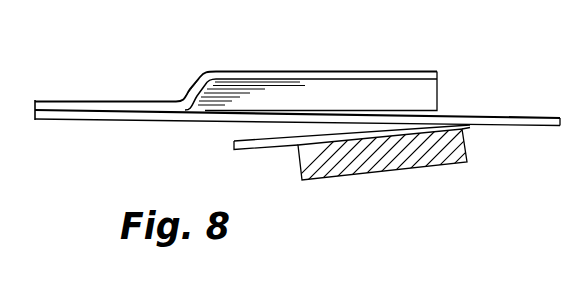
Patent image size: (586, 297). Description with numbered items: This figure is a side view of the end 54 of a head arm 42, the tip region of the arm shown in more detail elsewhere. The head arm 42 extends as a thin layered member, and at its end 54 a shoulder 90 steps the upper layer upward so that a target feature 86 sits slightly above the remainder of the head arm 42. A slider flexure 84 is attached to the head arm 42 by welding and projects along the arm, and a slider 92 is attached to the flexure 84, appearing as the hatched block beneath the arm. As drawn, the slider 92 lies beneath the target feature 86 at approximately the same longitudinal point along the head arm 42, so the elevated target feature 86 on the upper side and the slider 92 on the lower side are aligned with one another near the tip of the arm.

The head arm 42 is at (47, 100).
The end of head arm 54 is at (232, 68).
The shoulder 90 is at (196, 70).
The target feature 86 is at (343, 72).
The slider flexure 84 is at (497, 127).
The slider 92 is at (348, 175).